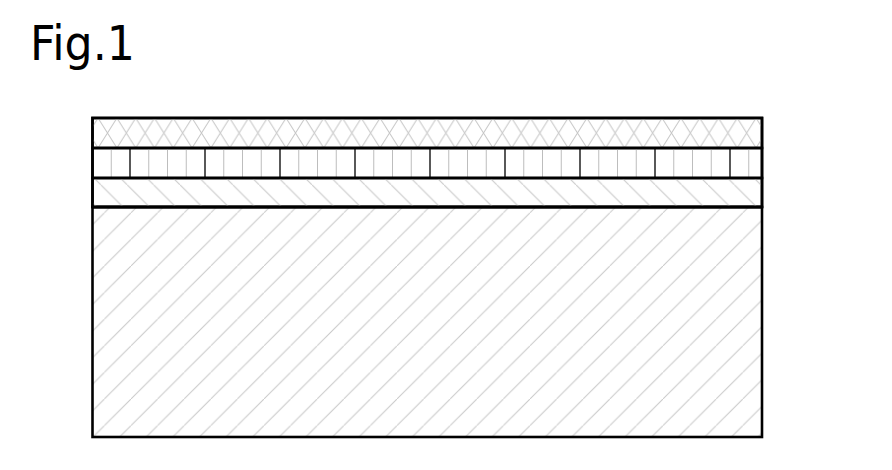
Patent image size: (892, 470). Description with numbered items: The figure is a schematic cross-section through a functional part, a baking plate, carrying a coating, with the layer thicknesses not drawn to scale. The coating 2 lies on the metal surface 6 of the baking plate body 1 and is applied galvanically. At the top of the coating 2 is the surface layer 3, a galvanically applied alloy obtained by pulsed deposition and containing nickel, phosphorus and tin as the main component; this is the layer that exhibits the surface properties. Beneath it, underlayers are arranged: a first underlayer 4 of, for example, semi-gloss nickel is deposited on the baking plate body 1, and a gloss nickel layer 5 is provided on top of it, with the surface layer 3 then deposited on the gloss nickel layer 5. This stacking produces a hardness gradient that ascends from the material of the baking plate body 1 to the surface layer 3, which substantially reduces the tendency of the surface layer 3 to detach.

The baking plate body 1 is at (145, 294).
The coating 2 is at (92, 118).
The surface layer 3 is at (746, 131).
The first underlayer 4 is at (750, 192).
The gloss nickel layer 5 is at (747, 162).
The metal surface 6 is at (121, 208).